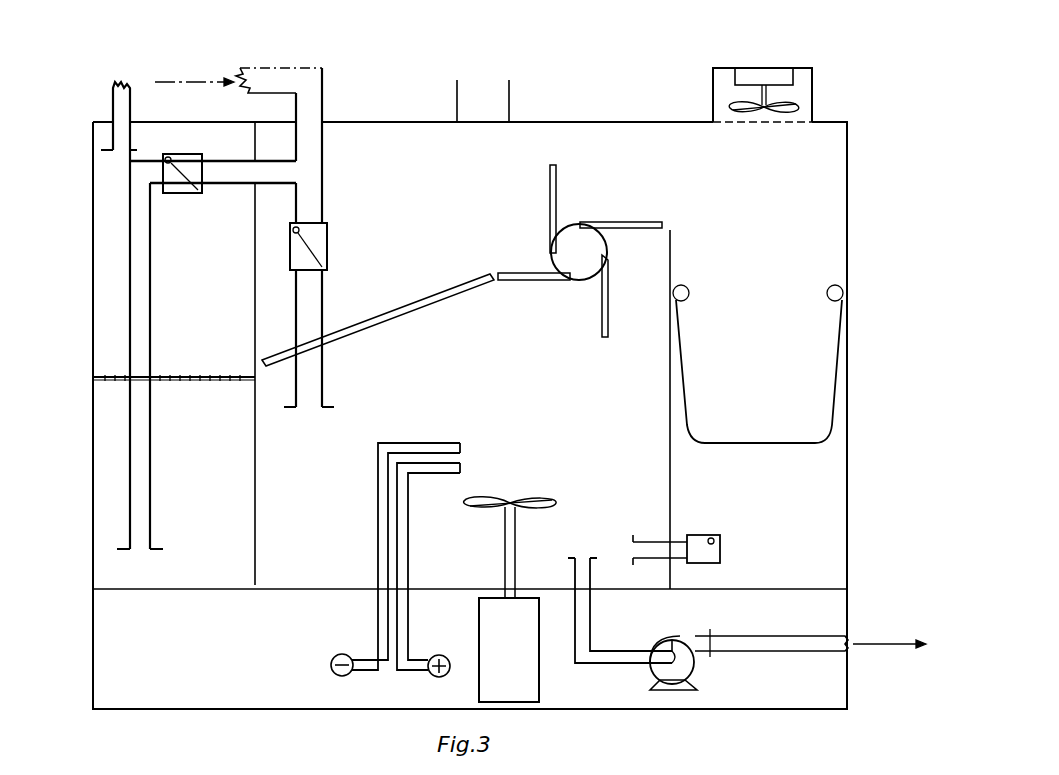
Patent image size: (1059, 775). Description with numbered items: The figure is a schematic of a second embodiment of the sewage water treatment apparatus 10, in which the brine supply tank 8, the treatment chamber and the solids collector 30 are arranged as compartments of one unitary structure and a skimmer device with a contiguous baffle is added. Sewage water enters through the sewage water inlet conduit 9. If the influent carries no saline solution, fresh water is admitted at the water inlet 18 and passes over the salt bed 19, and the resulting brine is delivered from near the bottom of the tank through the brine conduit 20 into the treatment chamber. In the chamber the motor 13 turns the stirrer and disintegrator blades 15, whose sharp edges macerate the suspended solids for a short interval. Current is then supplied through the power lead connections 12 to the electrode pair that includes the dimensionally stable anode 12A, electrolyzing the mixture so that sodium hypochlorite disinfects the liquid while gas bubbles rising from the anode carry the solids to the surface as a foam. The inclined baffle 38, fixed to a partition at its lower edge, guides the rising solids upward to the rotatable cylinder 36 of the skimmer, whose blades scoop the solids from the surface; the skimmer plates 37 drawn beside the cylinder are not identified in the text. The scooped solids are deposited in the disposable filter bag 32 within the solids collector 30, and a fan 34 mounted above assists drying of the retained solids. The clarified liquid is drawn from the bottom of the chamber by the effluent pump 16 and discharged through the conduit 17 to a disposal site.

The brine supply tank 8 is at (92, 540).
The sewage water inlet conduit 9 is at (268, 66).
The sewage water treatment apparatus 10 is at (497, 71).
The power lead connections 12 is at (447, 441).
The dimensionally stable anode 12A is at (458, 491).
The motor 13 is at (509, 604).
The stirrer and disintegrator blades 15 is at (522, 514).
The effluent pump 16 is at (690, 635).
The conduit 17 is at (666, 404).
The water inlet 18 is at (110, 100).
The salt bed 19 is at (126, 375).
The brine conduit 20 is at (154, 290).
The solids collector 30 is at (849, 532).
The disposable filter bag 32 is at (838, 402).
The fan 34 is at (712, 79).
The rotatable cylinder 36 is at (579, 252).
The skimmer guide plates 37 is at (640, 218).
The baffle 38 is at (383, 313).